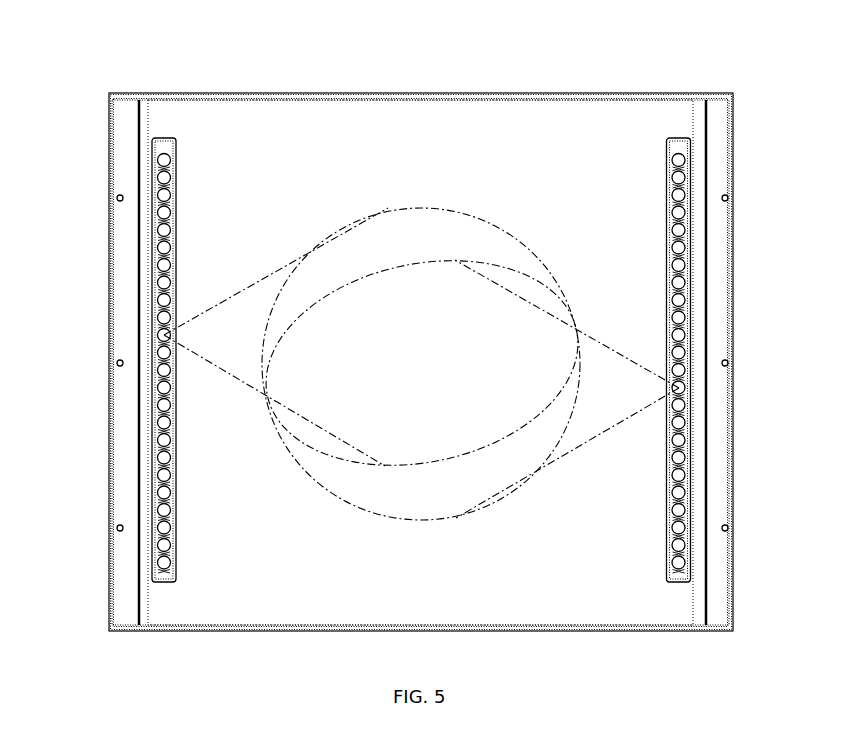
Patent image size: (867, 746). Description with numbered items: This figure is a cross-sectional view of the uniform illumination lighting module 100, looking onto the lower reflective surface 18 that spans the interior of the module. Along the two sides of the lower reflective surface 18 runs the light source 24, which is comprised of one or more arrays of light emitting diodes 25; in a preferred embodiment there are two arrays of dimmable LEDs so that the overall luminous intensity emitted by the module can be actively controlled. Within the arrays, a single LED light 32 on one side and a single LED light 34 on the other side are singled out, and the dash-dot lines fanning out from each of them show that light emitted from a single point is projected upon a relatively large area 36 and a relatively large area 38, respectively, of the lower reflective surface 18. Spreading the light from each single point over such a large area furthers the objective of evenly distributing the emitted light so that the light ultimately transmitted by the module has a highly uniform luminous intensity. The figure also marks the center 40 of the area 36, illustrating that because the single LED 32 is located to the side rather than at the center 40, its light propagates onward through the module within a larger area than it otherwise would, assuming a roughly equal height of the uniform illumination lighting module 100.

The uniform illumination lighting module 100 is at (172, 48).
The lower reflective surface 18 is at (263, 157).
The light source 24 is at (421, 301).
The array of light emitting diodes 25 is at (167, 130).
The single LED light 32 is at (162, 332).
The single LED light 34 is at (676, 386).
The area 36 is at (420, 205).
The area 38 is at (473, 520).
The center 40 is at (405, 345).